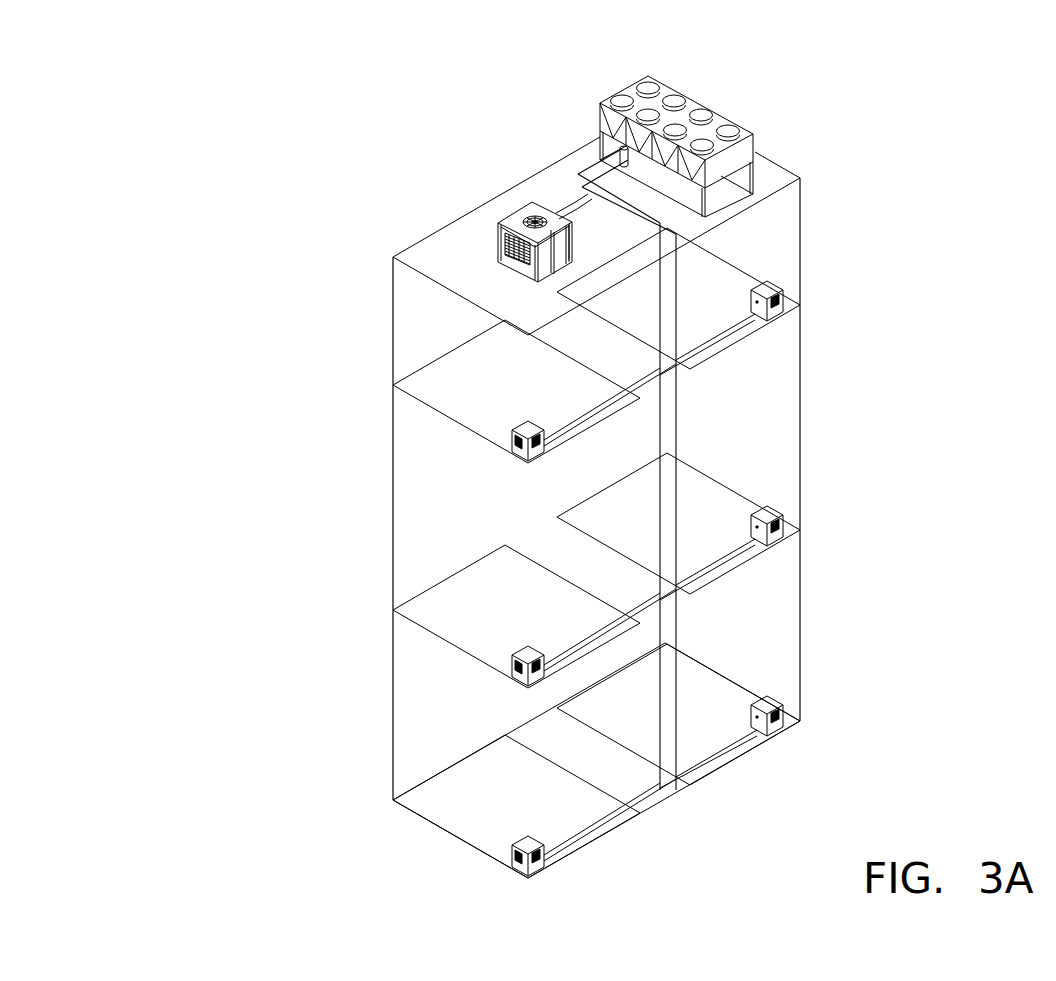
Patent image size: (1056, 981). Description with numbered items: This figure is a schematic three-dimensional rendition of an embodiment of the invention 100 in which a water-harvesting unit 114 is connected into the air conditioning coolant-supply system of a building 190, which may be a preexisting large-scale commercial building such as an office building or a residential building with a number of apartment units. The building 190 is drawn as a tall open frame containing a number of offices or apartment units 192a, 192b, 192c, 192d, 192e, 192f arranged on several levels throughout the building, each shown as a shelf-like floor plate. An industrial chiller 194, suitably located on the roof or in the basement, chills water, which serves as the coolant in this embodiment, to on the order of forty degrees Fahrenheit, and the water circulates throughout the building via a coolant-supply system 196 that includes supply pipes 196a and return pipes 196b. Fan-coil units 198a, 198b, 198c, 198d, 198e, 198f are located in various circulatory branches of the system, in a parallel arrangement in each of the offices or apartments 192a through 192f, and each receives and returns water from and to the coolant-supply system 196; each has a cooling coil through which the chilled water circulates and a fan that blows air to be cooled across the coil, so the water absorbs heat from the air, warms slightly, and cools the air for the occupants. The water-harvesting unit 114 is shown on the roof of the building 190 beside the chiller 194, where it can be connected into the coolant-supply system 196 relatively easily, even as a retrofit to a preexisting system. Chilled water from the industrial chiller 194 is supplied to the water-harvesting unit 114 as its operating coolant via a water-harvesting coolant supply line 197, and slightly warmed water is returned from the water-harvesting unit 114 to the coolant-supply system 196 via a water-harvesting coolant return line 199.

The embodiment of the invention 100 is at (362, 112).
The water-harvesting unit 114 is at (505, 216).
The building 190 is at (355, 562).
The office or apartment unit 192a is at (516, 806).
The office or apartment unit 192b is at (678, 714).
The office or apartment unit 192c is at (516, 616).
The office or apartment unit 192d is at (678, 523).
The office or apartment unit 192e is at (516, 391).
The office or apartment unit 192f is at (678, 298).
The industrial chiller 194 is at (705, 102).
The coolant-supply system 196 is at (577, 172).
The supply pipes 196a is at (660, 220).
The return pipes 196b is at (655, 230).
The water-harvesting coolant supply line 197 is at (560, 210).
The fan-coil unit 198a is at (513, 851).
The fan-coil unit 198b is at (787, 712).
The fan-coil unit 198c is at (513, 657).
The fan-coil unit 198d is at (787, 524).
The fan-coil unit 198e is at (513, 434).
The fan-coil unit 198f is at (787, 300).
The water-harvesting coolant return line 199 is at (583, 203).